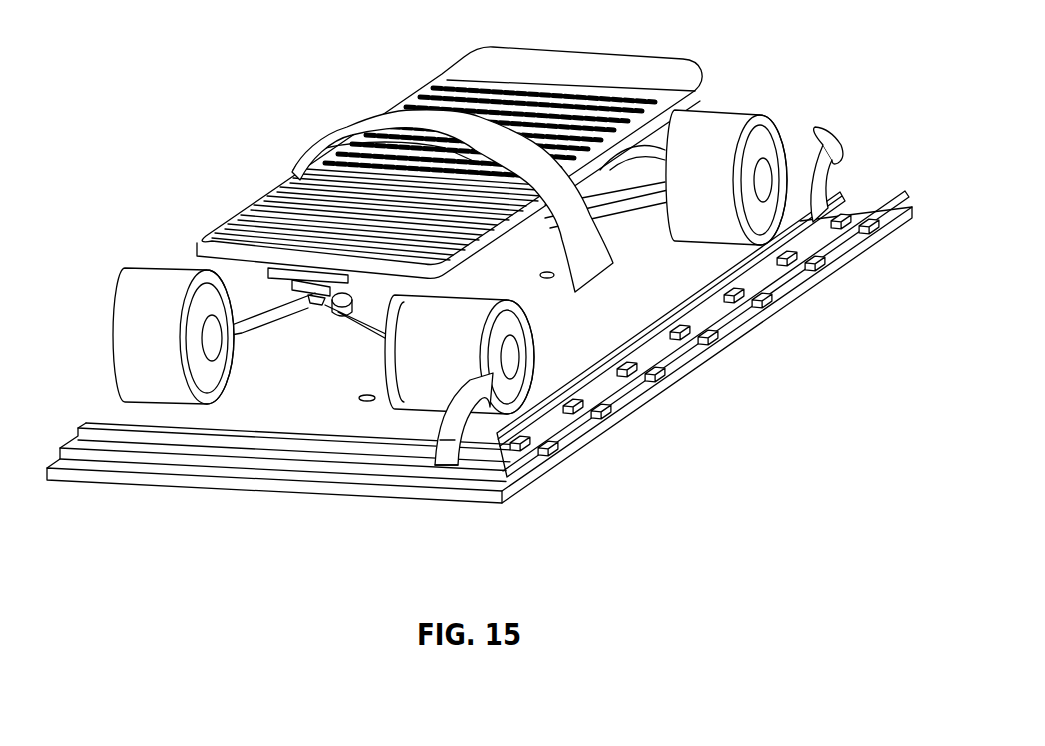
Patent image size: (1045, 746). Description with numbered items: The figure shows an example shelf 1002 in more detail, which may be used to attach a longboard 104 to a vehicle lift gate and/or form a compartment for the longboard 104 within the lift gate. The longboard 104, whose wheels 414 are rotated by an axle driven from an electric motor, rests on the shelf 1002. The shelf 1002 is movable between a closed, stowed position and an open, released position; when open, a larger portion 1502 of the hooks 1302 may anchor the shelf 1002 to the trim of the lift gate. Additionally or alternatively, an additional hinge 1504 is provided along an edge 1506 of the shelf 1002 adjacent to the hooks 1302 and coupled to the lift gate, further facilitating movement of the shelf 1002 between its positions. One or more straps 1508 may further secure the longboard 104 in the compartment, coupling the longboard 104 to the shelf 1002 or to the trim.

The longboard 104 is at (565, 87).
The strap 1508 is at (347, 132).
The wheels 414 is at (122, 343).
The larger portion 1502 is at (830, 160).
The hooks 1302 is at (825, 182).
The edge 1506 is at (840, 263).
The hinge 1504 is at (756, 322).
The shelf 1002 is at (277, 443).